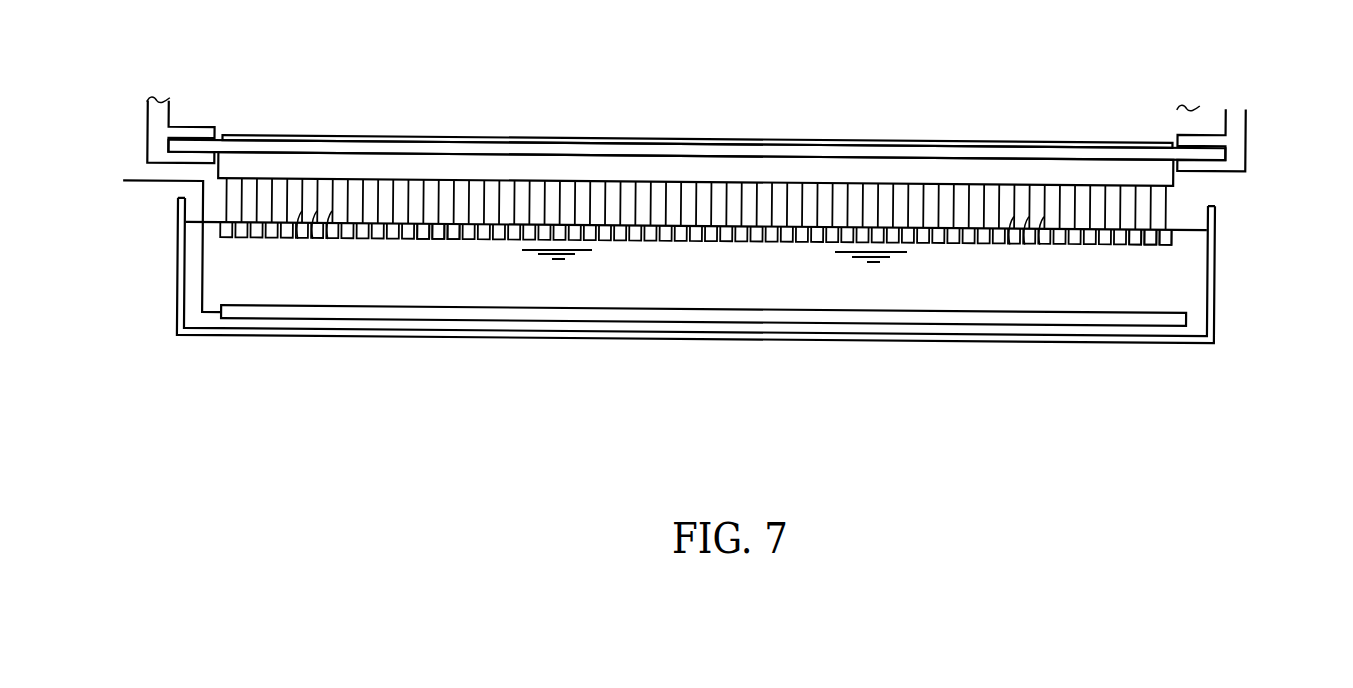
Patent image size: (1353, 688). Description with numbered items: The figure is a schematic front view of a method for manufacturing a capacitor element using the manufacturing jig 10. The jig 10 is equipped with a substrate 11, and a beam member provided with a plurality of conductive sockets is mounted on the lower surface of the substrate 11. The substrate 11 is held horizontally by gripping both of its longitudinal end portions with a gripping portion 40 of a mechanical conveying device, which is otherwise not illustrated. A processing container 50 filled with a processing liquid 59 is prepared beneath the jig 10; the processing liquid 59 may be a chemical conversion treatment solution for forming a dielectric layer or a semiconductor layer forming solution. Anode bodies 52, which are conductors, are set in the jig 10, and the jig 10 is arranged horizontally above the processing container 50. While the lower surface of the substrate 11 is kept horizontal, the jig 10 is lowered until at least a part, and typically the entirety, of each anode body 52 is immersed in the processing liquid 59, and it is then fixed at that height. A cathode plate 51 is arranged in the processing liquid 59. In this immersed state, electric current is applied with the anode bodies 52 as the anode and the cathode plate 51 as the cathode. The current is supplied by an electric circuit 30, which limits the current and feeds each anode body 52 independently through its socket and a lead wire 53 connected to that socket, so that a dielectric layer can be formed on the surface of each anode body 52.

The jig for manufacturing a capacitor element 10 is at (696, 147).
The substrate 11 is at (697, 141).
The electric circuit 30 is at (696, 150).
The gripping portion 40 is at (695, 134).
The processing container 50 is at (668, 261).
The cathode plate 51 is at (703, 315).
The anode body 52 is at (1180, 375).
The lead wire 53 is at (670, 228).
The processing liquid 59 is at (885, 295).